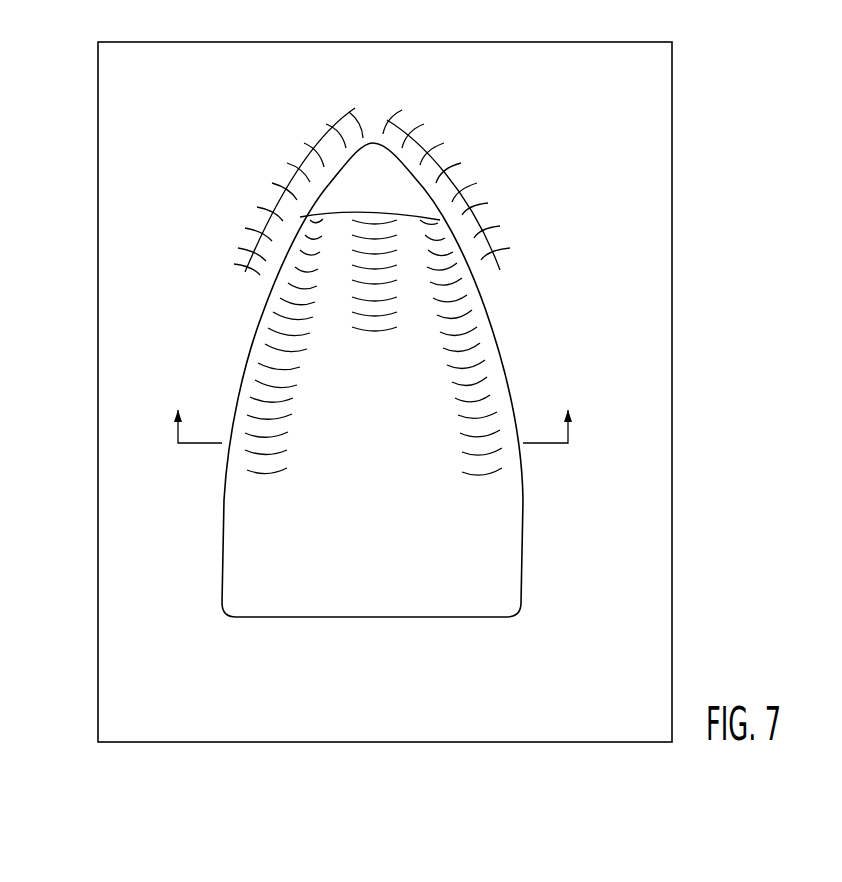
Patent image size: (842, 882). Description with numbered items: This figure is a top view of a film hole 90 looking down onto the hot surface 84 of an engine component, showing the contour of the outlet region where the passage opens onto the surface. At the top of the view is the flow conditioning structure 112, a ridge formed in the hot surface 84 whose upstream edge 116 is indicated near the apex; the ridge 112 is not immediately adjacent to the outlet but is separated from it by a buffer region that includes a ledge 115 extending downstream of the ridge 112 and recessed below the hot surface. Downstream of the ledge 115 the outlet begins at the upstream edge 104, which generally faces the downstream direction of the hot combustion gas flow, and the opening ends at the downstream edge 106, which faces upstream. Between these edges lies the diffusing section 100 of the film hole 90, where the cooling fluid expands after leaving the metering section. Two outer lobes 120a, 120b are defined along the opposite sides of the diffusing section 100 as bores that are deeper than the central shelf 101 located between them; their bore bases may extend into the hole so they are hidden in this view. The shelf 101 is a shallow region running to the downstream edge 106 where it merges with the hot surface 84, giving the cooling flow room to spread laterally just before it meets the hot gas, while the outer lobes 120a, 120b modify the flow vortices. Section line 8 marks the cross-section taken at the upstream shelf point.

The hot surface 84 is at (165, 152).
The diffusing section 100 is at (377, 463).
The shelf 101 is at (353, 547).
The downstream edge 106 is at (403, 620).
The upstream edge 104 is at (352, 214).
The film hole 90 is at (385, 273).
The outer lobe 120a is at (272, 380).
The outer lobe 120b is at (478, 393).
The flow conditioning structure 112 is at (393, 125).
The ledge 115 is at (378, 190).
The upstream edge of ridge 116 is at (383, 98).
The section line 8- 8 is at (376, 433).